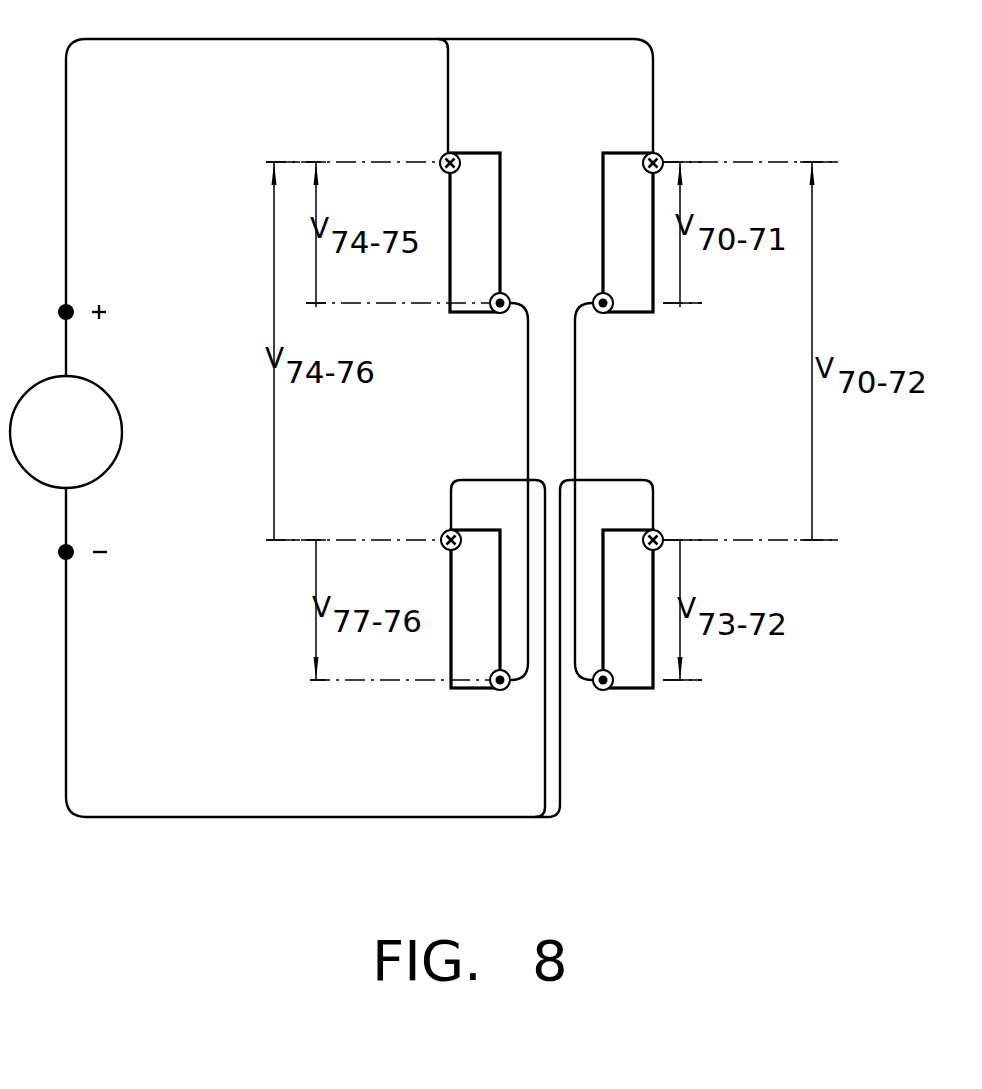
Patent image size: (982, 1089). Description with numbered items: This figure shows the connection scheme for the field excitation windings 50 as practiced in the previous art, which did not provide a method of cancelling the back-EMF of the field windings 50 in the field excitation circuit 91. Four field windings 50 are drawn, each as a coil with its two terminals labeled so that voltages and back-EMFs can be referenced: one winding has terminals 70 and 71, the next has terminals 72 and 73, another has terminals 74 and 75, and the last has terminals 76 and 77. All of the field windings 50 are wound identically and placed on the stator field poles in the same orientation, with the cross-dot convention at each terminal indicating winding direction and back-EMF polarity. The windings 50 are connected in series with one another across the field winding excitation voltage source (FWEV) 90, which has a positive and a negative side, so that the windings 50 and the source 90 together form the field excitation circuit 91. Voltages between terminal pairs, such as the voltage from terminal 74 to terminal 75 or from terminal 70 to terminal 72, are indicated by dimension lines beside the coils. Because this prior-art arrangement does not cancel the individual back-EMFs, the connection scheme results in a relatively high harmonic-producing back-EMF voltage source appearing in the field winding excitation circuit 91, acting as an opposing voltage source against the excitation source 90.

The field excitation winding 50 is at (492, 250).
The field winding terminal 70 is at (661, 153).
The field winding terminal 71 is at (610, 318).
The field winding terminal 72 is at (663, 531).
The field winding terminal 73 is at (612, 694).
The field winding terminal 74 is at (443, 154).
The field winding terminal 75 is at (493, 318).
The field winding terminal 76 is at (443, 531).
The field winding terminal 77 is at (495, 693).
The field winding excitation voltage source (FWEV) 90 is at (108, 389).
The field excitation circuit 91 is at (70, 136).